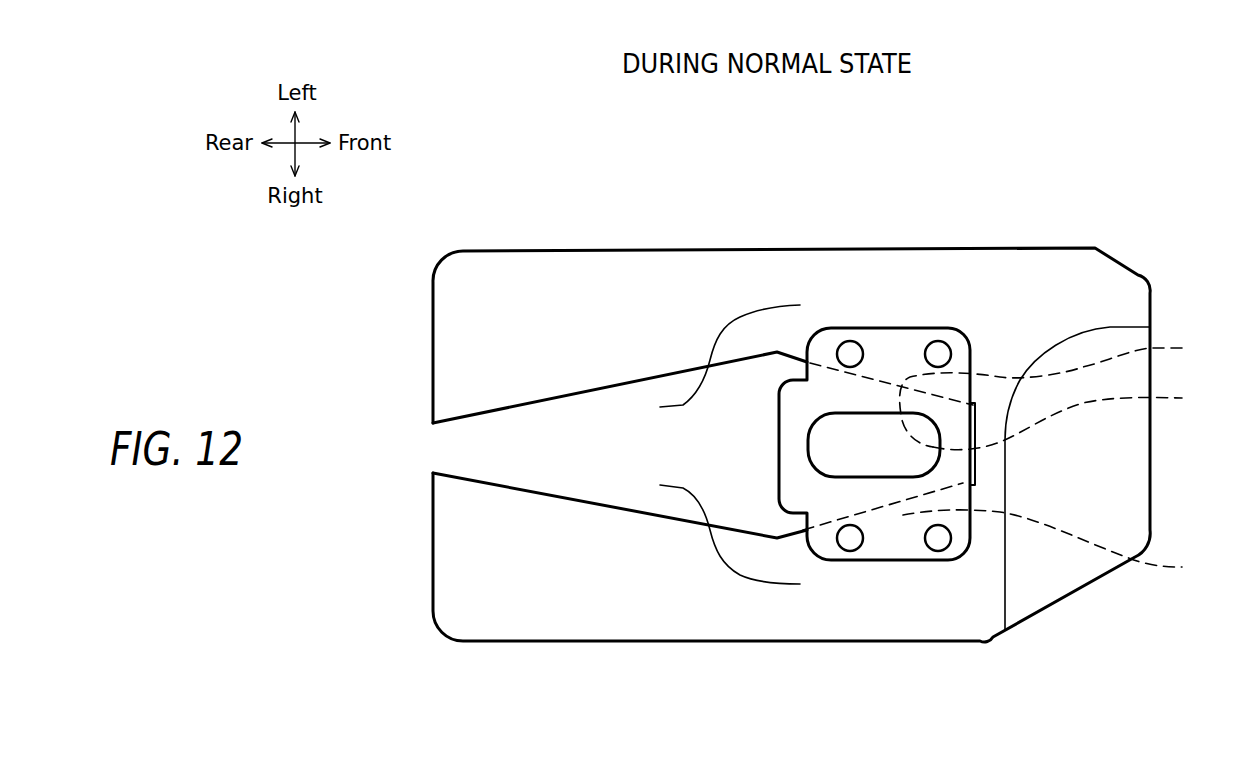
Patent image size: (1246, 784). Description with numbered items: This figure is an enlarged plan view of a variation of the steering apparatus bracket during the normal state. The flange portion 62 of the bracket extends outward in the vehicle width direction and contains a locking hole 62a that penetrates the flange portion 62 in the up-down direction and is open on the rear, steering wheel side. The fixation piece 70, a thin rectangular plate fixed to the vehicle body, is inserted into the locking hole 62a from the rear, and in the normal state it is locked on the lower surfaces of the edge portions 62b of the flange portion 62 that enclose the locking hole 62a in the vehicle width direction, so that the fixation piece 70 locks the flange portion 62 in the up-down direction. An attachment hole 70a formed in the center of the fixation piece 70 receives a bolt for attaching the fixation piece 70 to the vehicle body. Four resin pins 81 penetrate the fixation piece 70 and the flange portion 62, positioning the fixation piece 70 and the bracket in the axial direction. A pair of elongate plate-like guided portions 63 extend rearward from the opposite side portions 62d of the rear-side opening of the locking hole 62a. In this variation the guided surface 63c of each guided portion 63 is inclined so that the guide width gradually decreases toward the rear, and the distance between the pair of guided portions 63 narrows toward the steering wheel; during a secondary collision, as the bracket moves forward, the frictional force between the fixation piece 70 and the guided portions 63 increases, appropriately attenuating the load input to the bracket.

The flange portion 62 is at (1143, 660).
The locking hole 62a is at (1080, 418).
The edge portion 62b is at (1064, 459).
The opposite side portion 62d is at (792, 444).
The guided portion 63 is at (452, 312).
The guided surface 63c is at (558, 398).
The fixation piece 70 is at (793, 428).
The attachment hole 70a is at (858, 477).
The resin pin 81 is at (850, 354).